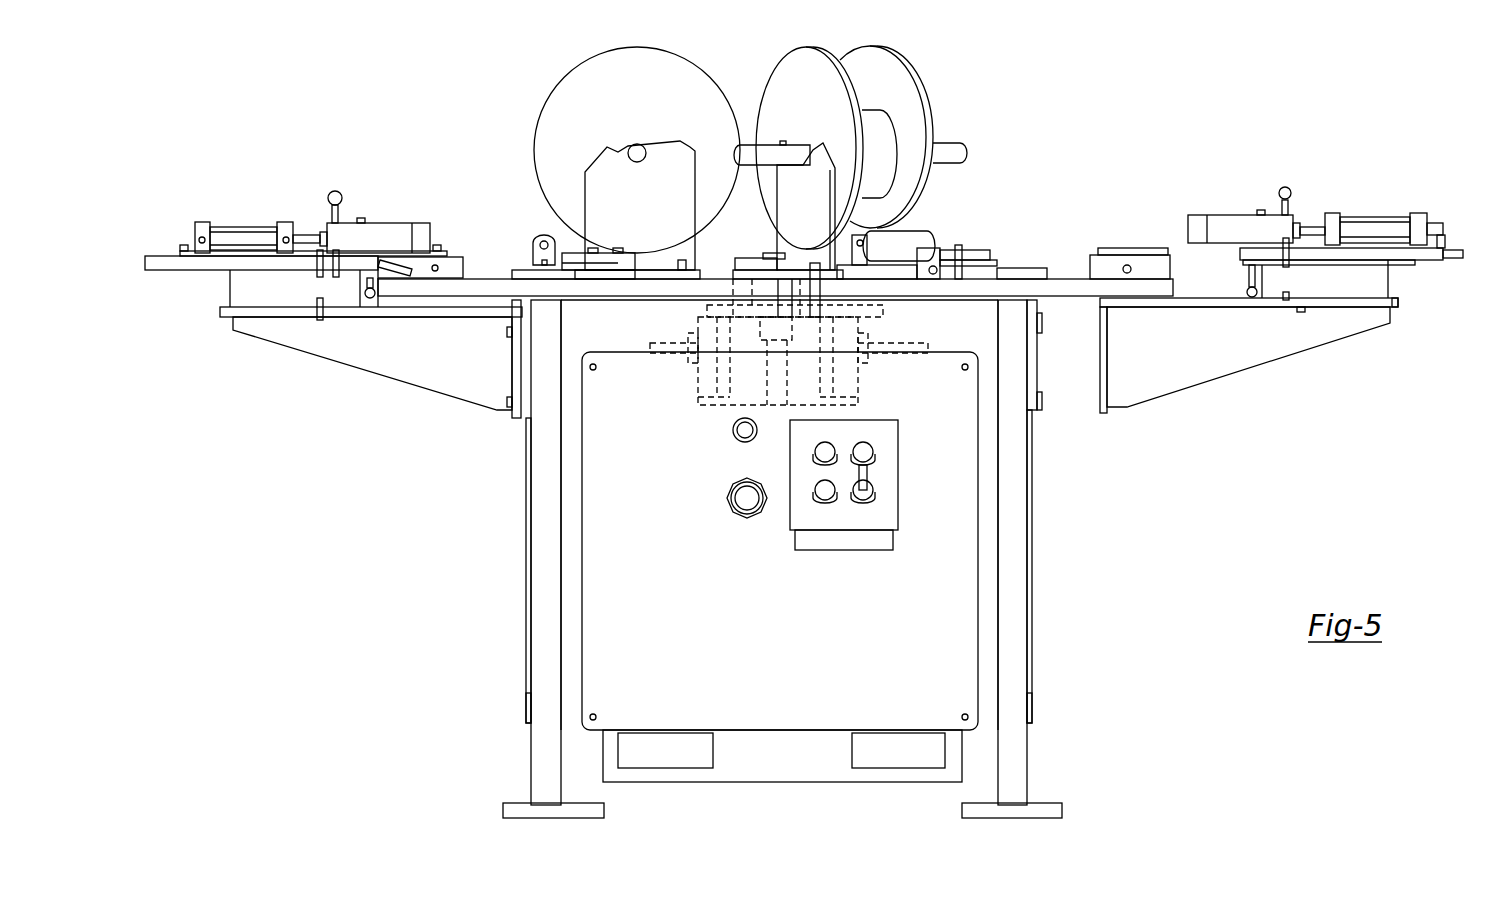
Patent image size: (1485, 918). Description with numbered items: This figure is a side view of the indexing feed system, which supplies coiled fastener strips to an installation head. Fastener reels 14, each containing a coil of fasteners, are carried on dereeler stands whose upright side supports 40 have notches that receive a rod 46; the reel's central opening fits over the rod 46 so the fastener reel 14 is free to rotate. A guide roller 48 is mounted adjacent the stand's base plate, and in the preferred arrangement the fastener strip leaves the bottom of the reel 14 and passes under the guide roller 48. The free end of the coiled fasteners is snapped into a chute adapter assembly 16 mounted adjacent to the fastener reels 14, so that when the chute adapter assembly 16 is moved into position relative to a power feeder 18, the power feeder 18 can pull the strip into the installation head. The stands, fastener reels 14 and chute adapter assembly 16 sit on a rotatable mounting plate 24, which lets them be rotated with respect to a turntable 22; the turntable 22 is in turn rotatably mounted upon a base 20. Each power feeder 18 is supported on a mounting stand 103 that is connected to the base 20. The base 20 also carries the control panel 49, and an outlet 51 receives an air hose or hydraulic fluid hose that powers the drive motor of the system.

The fastener reel 14 is at (598, 103).
The chute adapter assembly 16 is at (1083, 218).
The power feeder 18 is at (236, 165).
The base 20 is at (542, 642).
The turntable 22 is at (405, 288).
The rotatable mounting plate 24 is at (897, 272).
The upright side support 40 is at (608, 192).
The rod 46 is at (750, 150).
The guide roller 48 is at (912, 233).
The control panel 49 is at (845, 520).
The outlet 51 is at (745, 503).
The mounting stand 103 is at (442, 368).